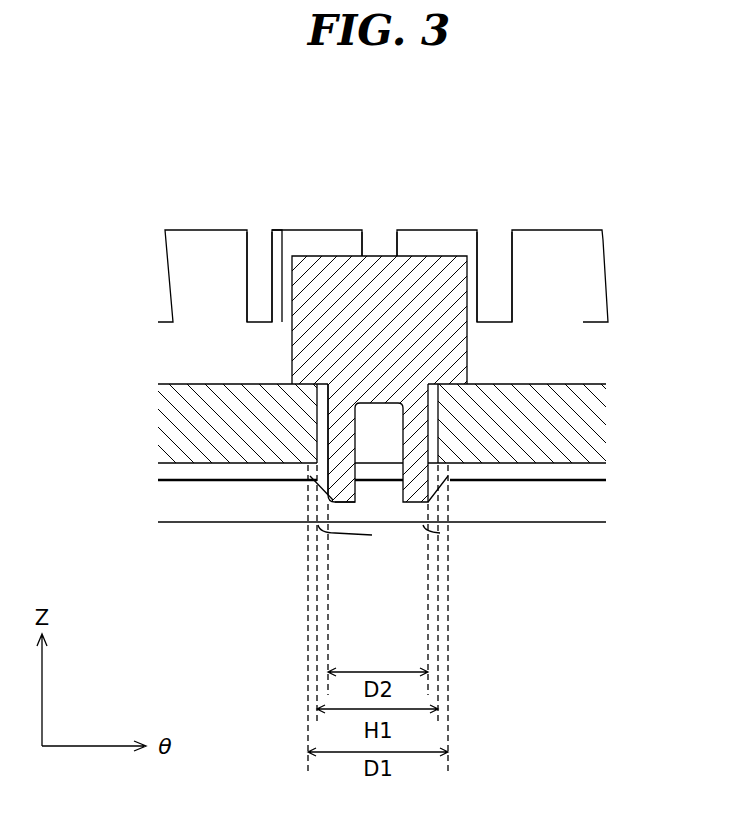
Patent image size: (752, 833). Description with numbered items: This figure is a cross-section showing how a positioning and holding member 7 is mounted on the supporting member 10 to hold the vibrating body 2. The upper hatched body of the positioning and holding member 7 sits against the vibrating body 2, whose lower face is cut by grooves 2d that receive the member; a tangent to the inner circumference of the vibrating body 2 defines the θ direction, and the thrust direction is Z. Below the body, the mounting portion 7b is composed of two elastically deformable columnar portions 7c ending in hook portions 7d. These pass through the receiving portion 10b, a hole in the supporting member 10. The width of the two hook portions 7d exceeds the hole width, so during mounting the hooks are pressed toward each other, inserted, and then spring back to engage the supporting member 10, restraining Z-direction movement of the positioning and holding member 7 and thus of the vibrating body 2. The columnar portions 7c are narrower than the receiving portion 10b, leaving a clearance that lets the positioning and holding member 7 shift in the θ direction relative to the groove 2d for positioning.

The vibrating body 2 is at (185, 355).
The groove 2d is at (265, 262).
The positioning and holding member 7 is at (440, 352).
The mounting portion 7b is at (265, 580).
The columnar portions 7c is at (335, 420).
The hook portions 7d is at (343, 485).
The supporting member 10 is at (523, 453).
The receiving portion 10b is at (432, 432).